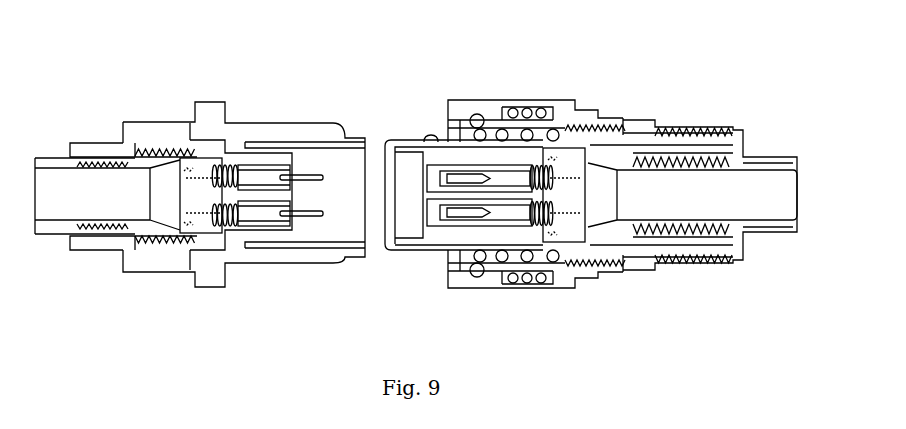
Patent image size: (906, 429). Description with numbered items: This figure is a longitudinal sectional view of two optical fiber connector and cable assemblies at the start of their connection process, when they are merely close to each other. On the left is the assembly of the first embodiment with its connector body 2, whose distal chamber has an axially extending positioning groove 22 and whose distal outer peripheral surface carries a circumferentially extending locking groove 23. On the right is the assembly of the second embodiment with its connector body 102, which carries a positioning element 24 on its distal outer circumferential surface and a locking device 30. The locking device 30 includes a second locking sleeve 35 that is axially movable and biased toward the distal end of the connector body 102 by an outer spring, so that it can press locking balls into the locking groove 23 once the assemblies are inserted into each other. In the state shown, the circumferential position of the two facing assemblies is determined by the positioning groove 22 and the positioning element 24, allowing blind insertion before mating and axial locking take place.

The connector body 2 is at (207, 167).
The positioning groove 22 is at (351, 143).
The locking groove 23 is at (348, 133).
The positioning element 24 is at (432, 137).
The locking device 30 is at (591, 148).
The second locking sleeve 35 is at (495, 112).
The connector body 102 is at (610, 133).